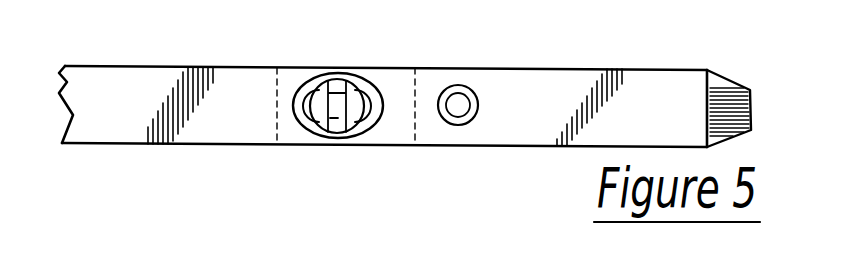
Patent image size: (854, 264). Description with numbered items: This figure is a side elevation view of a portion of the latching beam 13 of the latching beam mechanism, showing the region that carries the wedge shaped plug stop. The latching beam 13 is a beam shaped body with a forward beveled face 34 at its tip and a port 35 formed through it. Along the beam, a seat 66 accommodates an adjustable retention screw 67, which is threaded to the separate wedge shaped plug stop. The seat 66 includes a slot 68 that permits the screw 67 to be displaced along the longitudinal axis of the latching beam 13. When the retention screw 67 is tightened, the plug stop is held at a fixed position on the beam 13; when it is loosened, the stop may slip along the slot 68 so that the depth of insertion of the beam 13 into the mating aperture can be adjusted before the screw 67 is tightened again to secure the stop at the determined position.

The latching beam 13 is at (569, 68).
The forward beveled face 34 is at (722, 70).
The port 35 is at (466, 105).
The seat 66 is at (352, 82).
The adjustable retention screw 67 is at (318, 88).
The slot 68 is at (370, 112).